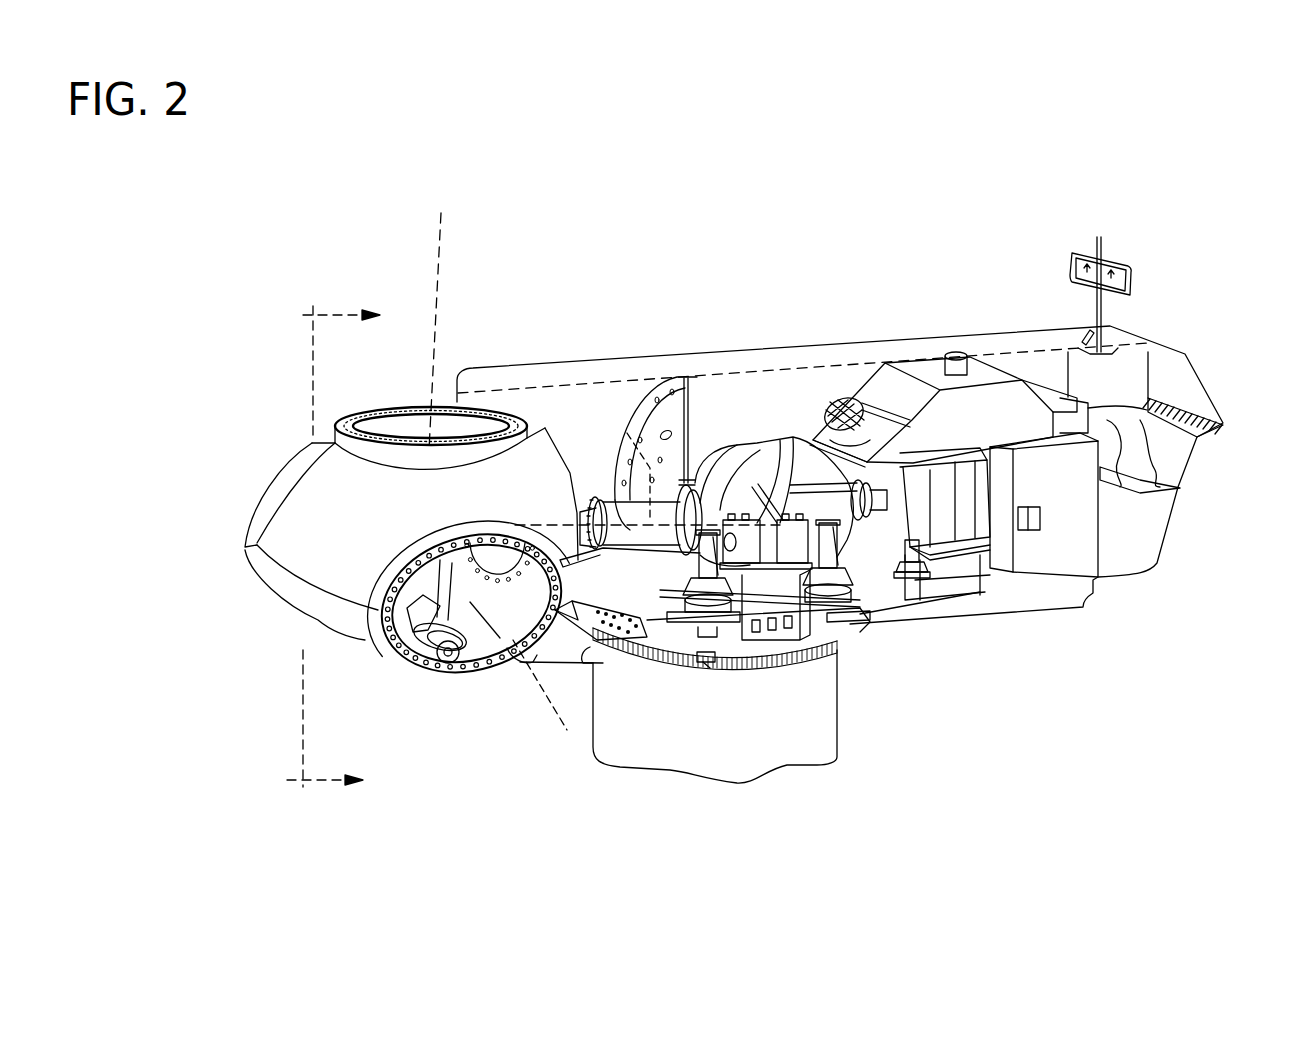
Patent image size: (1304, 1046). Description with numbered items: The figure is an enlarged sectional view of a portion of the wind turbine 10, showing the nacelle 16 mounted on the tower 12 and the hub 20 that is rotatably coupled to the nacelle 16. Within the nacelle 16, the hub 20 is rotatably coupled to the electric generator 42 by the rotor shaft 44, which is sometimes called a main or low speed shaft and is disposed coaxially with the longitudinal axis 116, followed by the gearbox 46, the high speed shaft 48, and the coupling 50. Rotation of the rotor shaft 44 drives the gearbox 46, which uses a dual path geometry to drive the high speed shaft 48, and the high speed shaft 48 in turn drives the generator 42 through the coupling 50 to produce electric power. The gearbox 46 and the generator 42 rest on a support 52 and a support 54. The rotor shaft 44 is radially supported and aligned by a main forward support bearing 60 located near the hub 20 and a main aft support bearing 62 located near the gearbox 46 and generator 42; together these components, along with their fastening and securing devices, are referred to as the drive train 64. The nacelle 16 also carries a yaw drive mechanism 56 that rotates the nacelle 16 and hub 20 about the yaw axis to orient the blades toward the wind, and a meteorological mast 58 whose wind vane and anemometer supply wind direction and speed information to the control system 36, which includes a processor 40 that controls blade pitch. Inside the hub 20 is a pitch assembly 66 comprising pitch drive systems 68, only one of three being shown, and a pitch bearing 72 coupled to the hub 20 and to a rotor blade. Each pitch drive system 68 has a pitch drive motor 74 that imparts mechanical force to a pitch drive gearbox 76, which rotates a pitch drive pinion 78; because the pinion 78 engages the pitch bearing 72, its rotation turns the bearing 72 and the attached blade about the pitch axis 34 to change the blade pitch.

The wind turbine 10 is at (258, 281).
The tower 12 is at (763, 768).
The nacelle 16 is at (813, 297).
The hub 20 is at (235, 534).
The pitch axis 34 is at (441, 243).
The control system 36 is at (1037, 467).
The processor 40 is at (1028, 535).
The electric generator 42 is at (932, 522).
The rotor shaft 44 is at (612, 505).
The gearbox 46 is at (807, 460).
The high speed shaft 48 is at (853, 540).
The coupling 50 is at (887, 467).
The support 52 is at (808, 643).
The support 54 is at (873, 523).
The yaw drive mechanism 56 is at (702, 643).
The meteorological mast 58 is at (1128, 270).
The main forward support bearing 60 is at (587, 530).
The main aft support bearing 62 is at (752, 478).
The drive train 64 is at (652, 448).
The pitch assembly 66 is at (428, 526).
The pitch drive system 68 is at (388, 623).
The pitch bearing 72 is at (412, 408).
The pitch drive motor 74 is at (418, 607).
The pitch drive gearbox 76 is at (454, 603).
The pitch drive pinion 78 is at (433, 665).
The longitudinal axis 116 is at (627, 433).